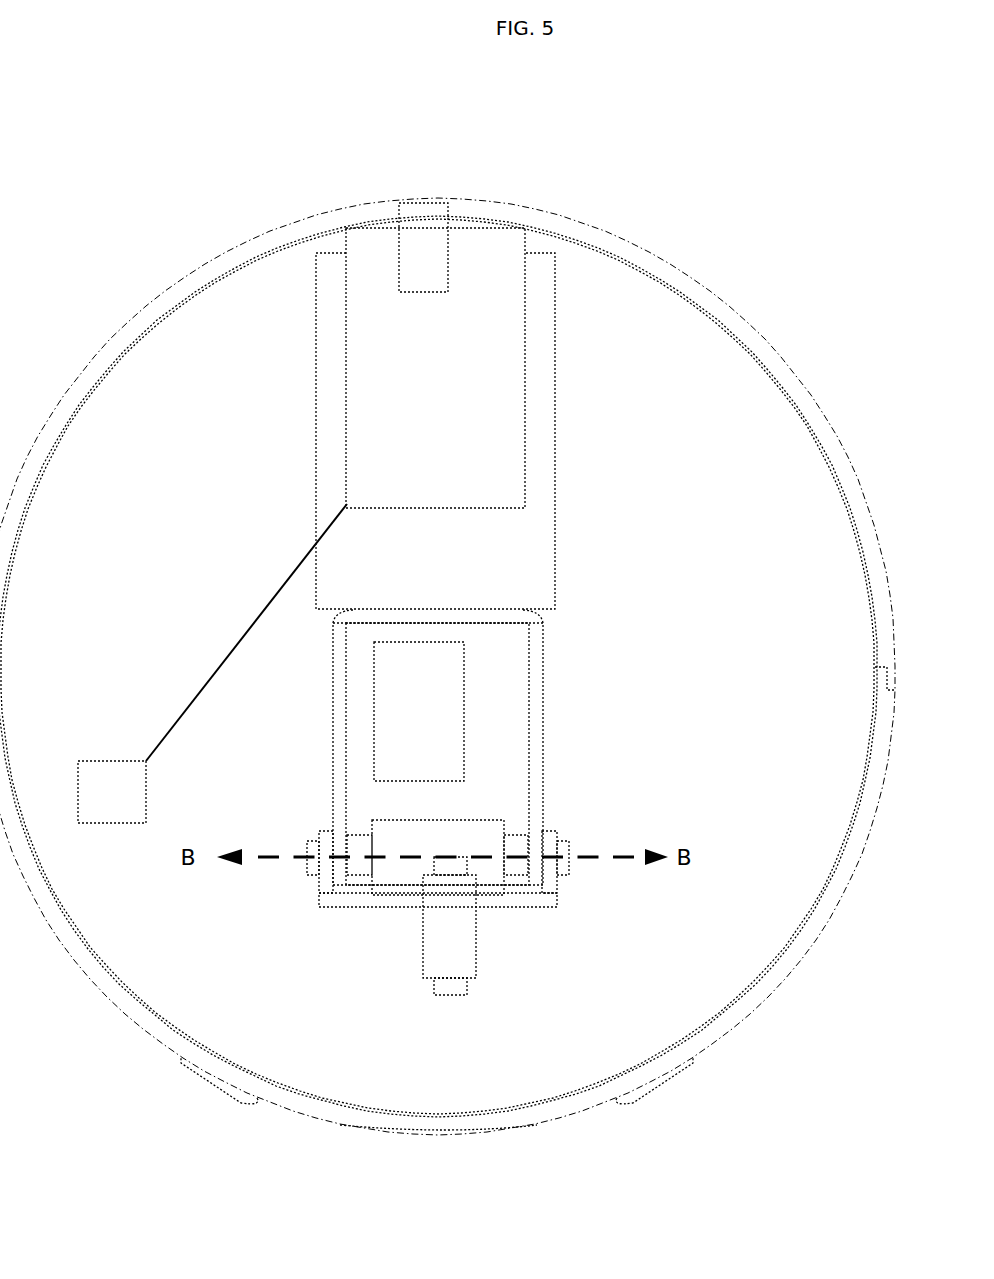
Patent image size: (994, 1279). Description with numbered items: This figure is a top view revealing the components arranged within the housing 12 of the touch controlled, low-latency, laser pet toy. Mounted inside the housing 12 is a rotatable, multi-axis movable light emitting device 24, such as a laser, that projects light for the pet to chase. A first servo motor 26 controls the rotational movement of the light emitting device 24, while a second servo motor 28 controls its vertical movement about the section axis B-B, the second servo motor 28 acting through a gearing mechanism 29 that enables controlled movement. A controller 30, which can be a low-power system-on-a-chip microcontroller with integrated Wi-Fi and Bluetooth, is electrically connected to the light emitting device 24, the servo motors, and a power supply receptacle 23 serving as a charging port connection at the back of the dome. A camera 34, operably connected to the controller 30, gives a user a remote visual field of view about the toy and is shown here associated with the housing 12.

The housing 12 is at (710, 959).
The power supply receptacle 23 is at (417, 209).
The light emitting device 24 is at (475, 967).
The first servo motor 26 is at (387, 766).
The second servo motor 28 is at (447, 821).
The gearing mechanism 29 is at (518, 843).
The controller 30 is at (507, 458).
The camera 34 is at (129, 778).